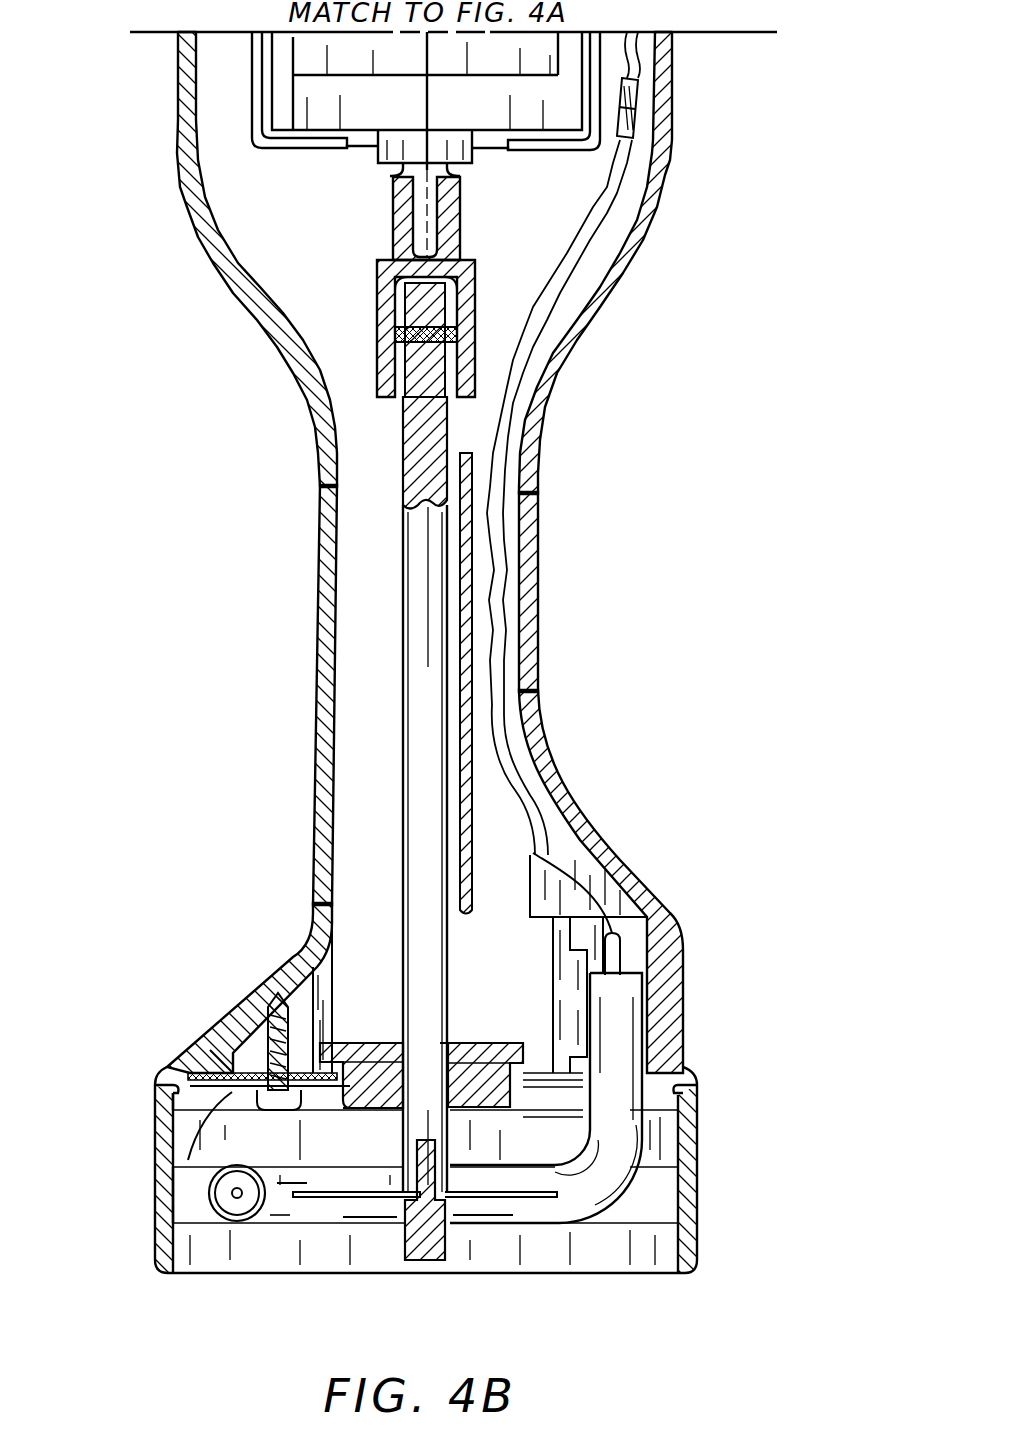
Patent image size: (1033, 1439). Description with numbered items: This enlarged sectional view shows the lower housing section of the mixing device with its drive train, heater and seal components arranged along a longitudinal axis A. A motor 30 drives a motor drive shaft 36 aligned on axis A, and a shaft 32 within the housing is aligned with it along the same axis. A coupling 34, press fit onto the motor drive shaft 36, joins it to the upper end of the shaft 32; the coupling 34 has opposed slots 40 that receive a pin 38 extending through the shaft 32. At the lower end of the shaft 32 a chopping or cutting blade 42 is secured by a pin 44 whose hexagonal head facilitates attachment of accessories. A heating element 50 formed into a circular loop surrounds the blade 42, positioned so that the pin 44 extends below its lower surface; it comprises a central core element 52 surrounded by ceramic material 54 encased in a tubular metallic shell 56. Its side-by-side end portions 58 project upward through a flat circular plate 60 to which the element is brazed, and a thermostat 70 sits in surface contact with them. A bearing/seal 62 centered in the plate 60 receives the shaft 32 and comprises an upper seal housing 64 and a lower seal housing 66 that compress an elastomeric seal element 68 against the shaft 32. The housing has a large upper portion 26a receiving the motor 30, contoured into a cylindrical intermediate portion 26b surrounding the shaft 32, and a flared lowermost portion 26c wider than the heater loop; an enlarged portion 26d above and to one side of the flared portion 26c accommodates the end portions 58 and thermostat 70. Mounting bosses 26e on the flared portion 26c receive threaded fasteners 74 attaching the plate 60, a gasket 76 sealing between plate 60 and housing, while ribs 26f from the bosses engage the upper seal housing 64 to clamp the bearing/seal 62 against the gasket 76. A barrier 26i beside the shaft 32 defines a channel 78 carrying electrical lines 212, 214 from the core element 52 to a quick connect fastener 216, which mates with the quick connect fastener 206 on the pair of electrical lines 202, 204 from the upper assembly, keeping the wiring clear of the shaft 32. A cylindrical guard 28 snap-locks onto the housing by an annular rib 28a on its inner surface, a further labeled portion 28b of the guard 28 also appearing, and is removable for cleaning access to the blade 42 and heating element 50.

The upper portion 26a is at (177, 52).
The intermediate portion 26b is at (321, 500).
The flared lower portion 26c is at (248, 1020).
The enlarged portion 26d is at (640, 884).
The mounting bosses 26e is at (231, 1038).
The ribs 26f is at (325, 990).
The barrier 26i is at (523, 505).
The guard 28 is at (699, 1195).
The annular rib 28a is at (175, 1097).
The base lower wall portion 28b is at (190, 1190).
The motor 30 is at (325, 108).
The shaft 32 is at (410, 705).
The coupling 34 is at (486, 298).
The motor drive shaft 36 is at (420, 223).
The pin 38 is at (381, 322).
The opposed slots 40 is at (395, 388).
The chopping or cutting blade 42 is at (531, 1198).
The pin 44 is at (428, 1263).
The heating element 50 is at (281, 1198).
The central core element 52 is at (617, 947).
The ceramic material 54 is at (214, 1207).
The tubular metallic shell 56 is at (341, 1205).
The end portions 58 is at (611, 1030).
The plate 60 is at (215, 1140).
The bearing/seal 62 is at (462, 1040).
The upper seal housing 64 is at (505, 1073).
The lower seal housing 66 is at (491, 1101).
The seal element 68 is at (381, 1048).
The thermostat 70 is at (574, 977).
The threaded fasteners 74 is at (276, 995).
The gasket 76 is at (218, 1057).
The channel 78 is at (508, 567).
The electrical line 202 is at (668, 40).
The electrical line 204 is at (664, 72).
The quick connect fastener 206 is at (661, 100).
The electrical line 212 is at (500, 752).
The electrical line 214 is at (516, 700).
The quick connect fastener 216 is at (660, 140).
The axis A is at (422, 580).